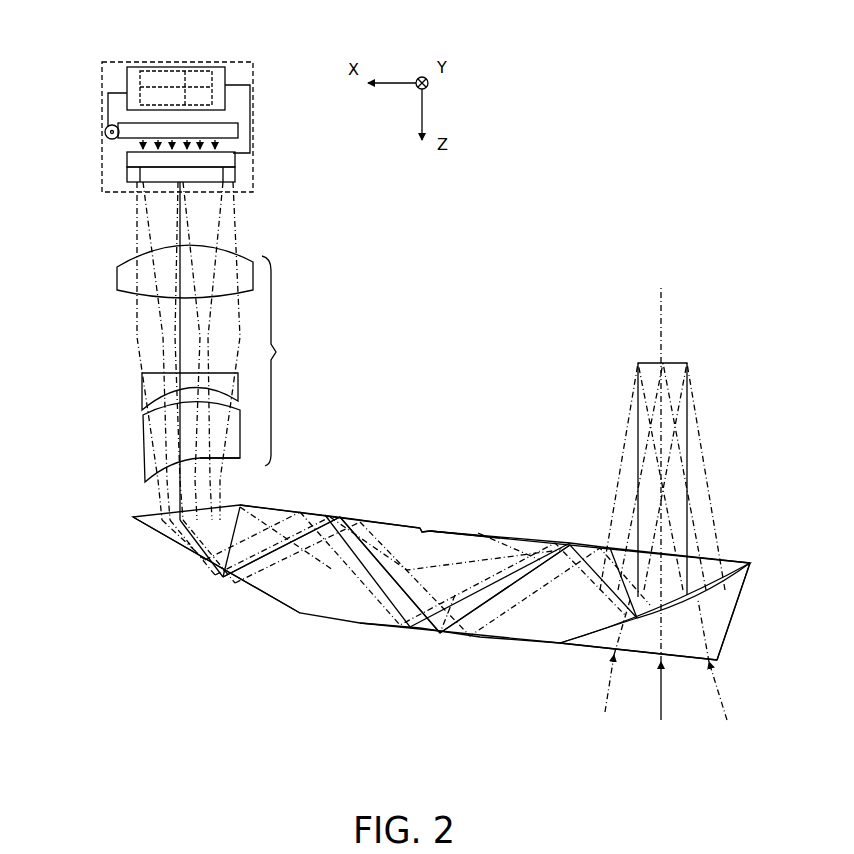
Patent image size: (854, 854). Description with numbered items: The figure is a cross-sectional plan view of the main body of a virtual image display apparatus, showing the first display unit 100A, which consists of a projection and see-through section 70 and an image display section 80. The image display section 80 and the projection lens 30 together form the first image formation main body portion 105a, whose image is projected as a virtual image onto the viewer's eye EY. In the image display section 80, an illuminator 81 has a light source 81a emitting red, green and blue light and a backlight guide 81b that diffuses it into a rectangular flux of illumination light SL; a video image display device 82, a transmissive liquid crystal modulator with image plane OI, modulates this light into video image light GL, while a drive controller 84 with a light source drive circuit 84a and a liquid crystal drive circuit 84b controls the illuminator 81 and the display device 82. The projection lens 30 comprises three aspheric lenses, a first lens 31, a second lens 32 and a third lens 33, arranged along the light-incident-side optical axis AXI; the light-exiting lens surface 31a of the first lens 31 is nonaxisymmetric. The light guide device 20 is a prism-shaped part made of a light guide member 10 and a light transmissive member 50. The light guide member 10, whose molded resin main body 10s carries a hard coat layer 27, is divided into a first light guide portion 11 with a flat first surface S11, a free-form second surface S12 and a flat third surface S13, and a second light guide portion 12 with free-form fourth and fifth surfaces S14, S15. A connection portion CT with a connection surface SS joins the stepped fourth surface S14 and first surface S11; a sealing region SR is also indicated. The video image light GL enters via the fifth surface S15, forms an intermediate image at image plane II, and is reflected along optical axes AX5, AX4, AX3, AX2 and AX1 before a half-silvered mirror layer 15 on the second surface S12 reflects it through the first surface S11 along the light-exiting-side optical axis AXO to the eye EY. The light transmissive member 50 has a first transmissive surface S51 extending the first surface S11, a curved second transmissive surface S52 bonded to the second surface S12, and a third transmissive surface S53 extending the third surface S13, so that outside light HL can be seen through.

The image display section 80 is at (242, 64).
The drive controller 84 is at (153, 66).
The light source drive circuit 84a is at (178, 70).
The liquid crystal drive circuit 84b is at (208, 70).
The illuminator 81 is at (96, 121).
The light source 81a is at (104, 132).
The backlight guide 81b is at (131, 139).
The illumination light SL is at (238, 142).
The image plane of the video image display device OI is at (237, 169).
The video image display device 82 is at (122, 177).
The video image light GL is at (233, 213).
The light-incident-side optical axis AXI is at (187, 242).
The projection lens 30 is at (284, 361).
The third lens 33 is at (118, 283).
The second lens 32 is at (148, 392).
The first lens 31 is at (150, 445).
The lens surface 31a is at (228, 460).
The light guide member 10 is at (454, 466).
The light guide device 20 is at (421, 687).
The second light guide portion 12 is at (300, 600).
The first light guide portion 11 is at (535, 635).
The fifth surface S15 is at (230, 580).
The fourth surface S14 is at (345, 516).
The third surface S13 is at (487, 640).
The second surface S12 is at (603, 640).
The first surface S11 is at (575, 545).
The half-silvered mirror layer 15 is at (640, 640).
The connection surface SS is at (421, 530).
The main body 10s is at (444, 540).
The image plane of the intermediate image II is at (455, 595).
The hard coat layer 27 is at (478, 533).
The optical axis AX2 is at (543, 562).
The optical axis AX3 is at (363, 518).
The optical axis AX4 is at (245, 577).
The optical axis AX5 is at (167, 555).
The optical axis AX1 is at (680, 658).
The light-exiting-side optical axis AXO is at (664, 320).
The eye EY is at (637, 365).
The light transmissive member 50 is at (725, 640).
The first transmissive surface S51 is at (753, 560).
The second transmissive surface S52 is at (712, 540).
The third transmissive surface S53 is at (683, 653).
The outside light HL is at (725, 718).
The projection and see-through section 70 is at (384, 371).
The sealing region SR is at (423, 404).
The connection portion CT is at (420, 496).
The first image formation main body portion 105a is at (466, 279).
The first display unit 100A is at (553, 199).